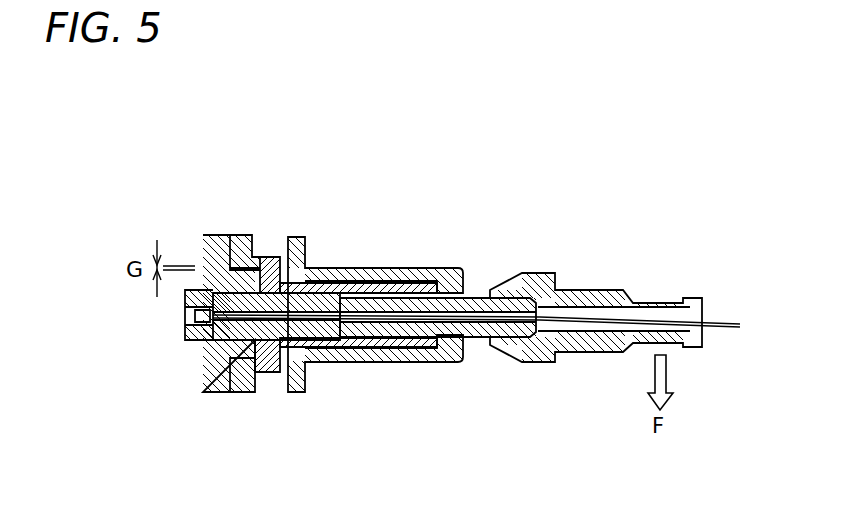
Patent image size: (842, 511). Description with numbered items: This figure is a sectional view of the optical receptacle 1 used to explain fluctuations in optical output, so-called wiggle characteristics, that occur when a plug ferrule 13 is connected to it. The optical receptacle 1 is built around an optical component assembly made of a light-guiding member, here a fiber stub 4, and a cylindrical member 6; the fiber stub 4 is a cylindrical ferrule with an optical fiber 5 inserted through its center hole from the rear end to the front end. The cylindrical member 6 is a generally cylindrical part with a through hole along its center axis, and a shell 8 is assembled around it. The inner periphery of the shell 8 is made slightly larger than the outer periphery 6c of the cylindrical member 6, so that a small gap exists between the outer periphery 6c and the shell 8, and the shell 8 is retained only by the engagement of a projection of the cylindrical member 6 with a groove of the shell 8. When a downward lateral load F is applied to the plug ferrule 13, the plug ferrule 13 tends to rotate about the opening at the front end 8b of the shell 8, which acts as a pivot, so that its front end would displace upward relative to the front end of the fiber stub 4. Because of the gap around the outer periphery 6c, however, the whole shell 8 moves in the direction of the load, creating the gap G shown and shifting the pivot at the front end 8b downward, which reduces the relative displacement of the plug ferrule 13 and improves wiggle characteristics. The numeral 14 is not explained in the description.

The optical receptacle 1 is at (405, 120).
The fiber stub 4 is at (273, 372).
The optical fiber 5 is at (312, 362).
The cylindrical member 6 is at (217, 382).
The outer periphery 6c is at (243, 238).
The shell 8 is at (247, 392).
The front end 8b is at (458, 290).
The plug ferrule 13 is at (507, 290).
The ferrule 14 is at (474, 300).